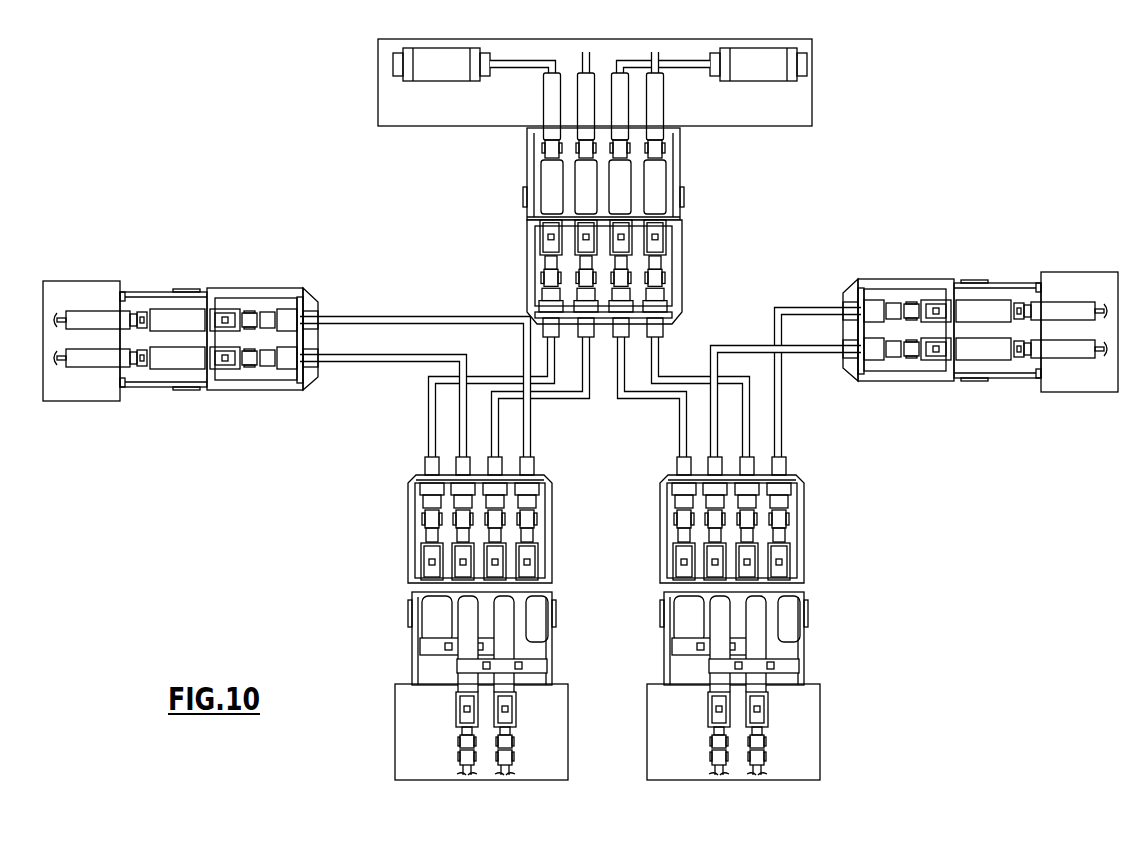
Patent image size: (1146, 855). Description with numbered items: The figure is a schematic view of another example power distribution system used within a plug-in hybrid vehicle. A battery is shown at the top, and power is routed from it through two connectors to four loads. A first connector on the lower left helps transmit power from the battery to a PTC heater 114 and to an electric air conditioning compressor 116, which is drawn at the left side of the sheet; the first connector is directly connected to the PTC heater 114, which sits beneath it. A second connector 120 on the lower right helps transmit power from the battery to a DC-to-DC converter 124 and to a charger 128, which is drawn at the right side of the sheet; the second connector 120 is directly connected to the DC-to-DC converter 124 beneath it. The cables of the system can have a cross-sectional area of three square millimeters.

The electric air conditioning compressor 116 is at (92, 281).
The charger 128 is at (1068, 271).
The second connector 120 is at (850, 584).
The PTC heater 114 is at (553, 781).
The DC-to-DC converter 124 is at (806, 781).